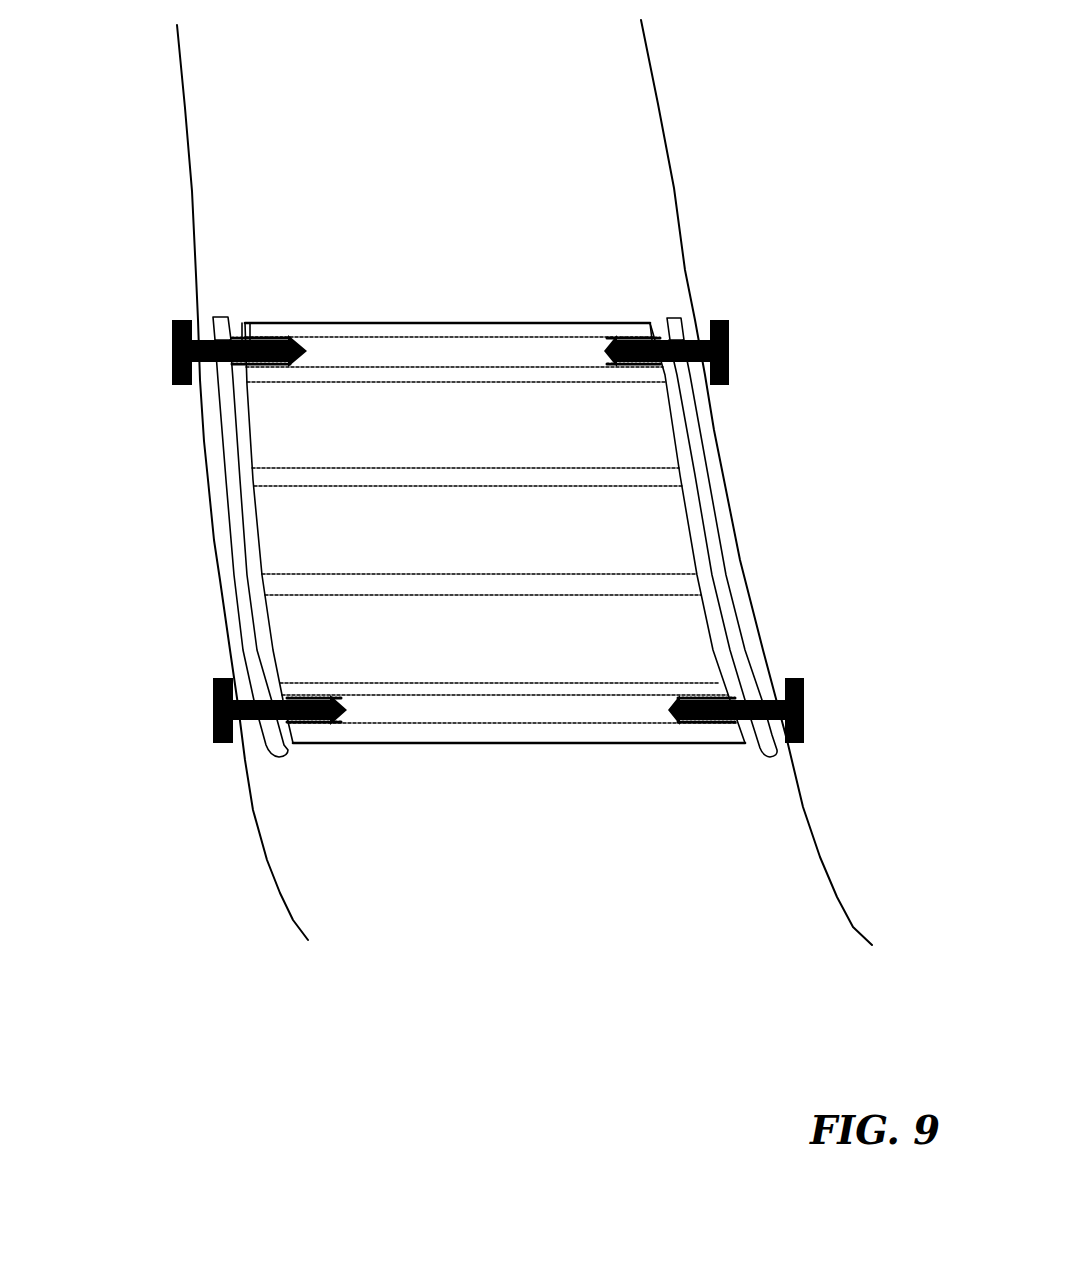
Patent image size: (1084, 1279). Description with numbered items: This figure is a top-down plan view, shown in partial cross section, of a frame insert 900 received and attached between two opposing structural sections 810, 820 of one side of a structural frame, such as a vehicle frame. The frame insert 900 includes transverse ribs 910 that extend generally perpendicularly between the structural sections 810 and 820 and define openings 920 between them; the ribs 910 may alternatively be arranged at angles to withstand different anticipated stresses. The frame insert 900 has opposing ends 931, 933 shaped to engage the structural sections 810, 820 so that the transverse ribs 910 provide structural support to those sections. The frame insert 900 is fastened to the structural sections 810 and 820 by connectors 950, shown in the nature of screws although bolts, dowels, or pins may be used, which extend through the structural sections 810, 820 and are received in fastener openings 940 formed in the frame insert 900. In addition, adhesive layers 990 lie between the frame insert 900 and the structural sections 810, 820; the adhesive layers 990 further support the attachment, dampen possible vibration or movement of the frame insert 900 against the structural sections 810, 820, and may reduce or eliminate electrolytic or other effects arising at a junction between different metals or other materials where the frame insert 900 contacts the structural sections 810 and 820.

The structural section 810 is at (185, 482).
The structural section 820 is at (756, 482).
The frame insert 900 is at (495, 486).
The transverse ribs 910 is at (388, 497).
The openings 920 is at (566, 488).
The opposing end 931 is at (303, 257).
The opposing end 933 is at (595, 257).
The fastener openings 940 is at (491, 524).
The connectors 950 is at (488, 522).
The adhesive layers 990 is at (487, 537).